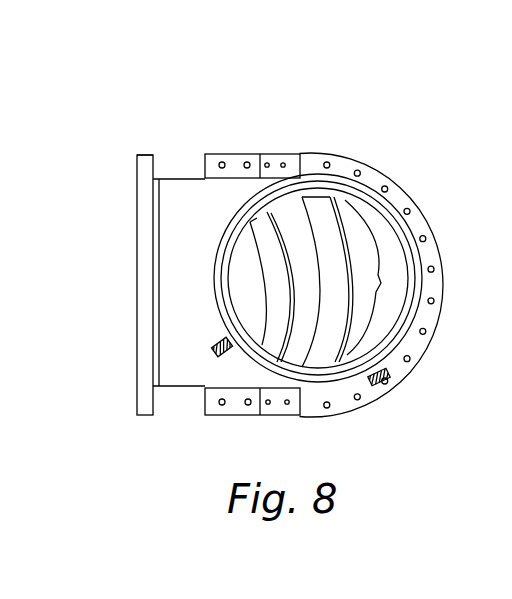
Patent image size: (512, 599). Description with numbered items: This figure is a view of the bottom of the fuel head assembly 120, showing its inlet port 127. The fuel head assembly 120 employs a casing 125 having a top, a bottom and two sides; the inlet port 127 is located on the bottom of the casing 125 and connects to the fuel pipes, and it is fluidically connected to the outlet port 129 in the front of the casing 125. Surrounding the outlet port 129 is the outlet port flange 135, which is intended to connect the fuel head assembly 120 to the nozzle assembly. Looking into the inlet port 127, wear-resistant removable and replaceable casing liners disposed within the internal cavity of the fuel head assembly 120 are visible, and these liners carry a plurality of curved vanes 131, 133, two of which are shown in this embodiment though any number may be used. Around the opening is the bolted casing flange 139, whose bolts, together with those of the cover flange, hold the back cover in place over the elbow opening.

The fuel head assembly 120 is at (282, 58).
The casing 125 is at (180, 358).
The inlet port 127 is at (357, 323).
The outlet port 129 is at (137, 283).
The curved vane 131 is at (322, 340).
The curved vane 133 is at (272, 327).
The outlet port flange 135 is at (138, 155).
The casing flange 139 is at (372, 177).